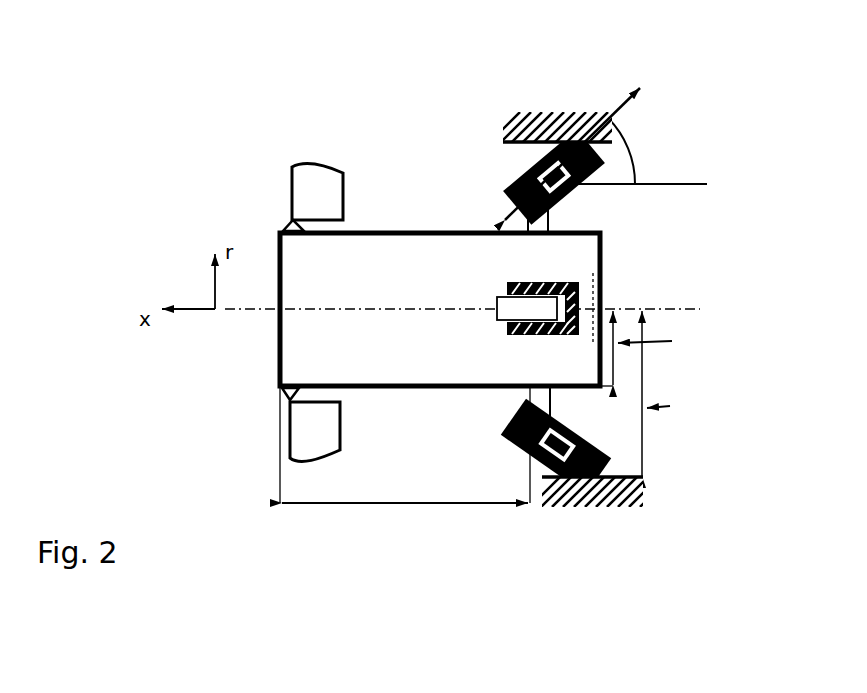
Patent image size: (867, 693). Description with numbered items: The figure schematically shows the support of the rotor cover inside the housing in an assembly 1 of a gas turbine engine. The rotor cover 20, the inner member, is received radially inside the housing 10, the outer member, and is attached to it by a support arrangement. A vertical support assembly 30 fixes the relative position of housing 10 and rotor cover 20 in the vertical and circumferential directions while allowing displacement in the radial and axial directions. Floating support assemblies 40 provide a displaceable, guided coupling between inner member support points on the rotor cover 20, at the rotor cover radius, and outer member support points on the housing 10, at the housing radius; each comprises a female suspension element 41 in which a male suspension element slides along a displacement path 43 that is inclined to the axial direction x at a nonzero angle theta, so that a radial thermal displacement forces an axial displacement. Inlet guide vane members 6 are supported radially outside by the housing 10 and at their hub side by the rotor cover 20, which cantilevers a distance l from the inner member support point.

The assembly 1 is at (236, 391).
The inlet guide vane members 6 is at (309, 203).
The housing 10 is at (525, 111).
The rotor cover 20 is at (410, 231).
The vertical support assembly 30 is at (584, 296).
The floating support assembly 40 is at (598, 433).
The female suspension element 41 is at (507, 183).
The displacement path 43 is at (616, 109).